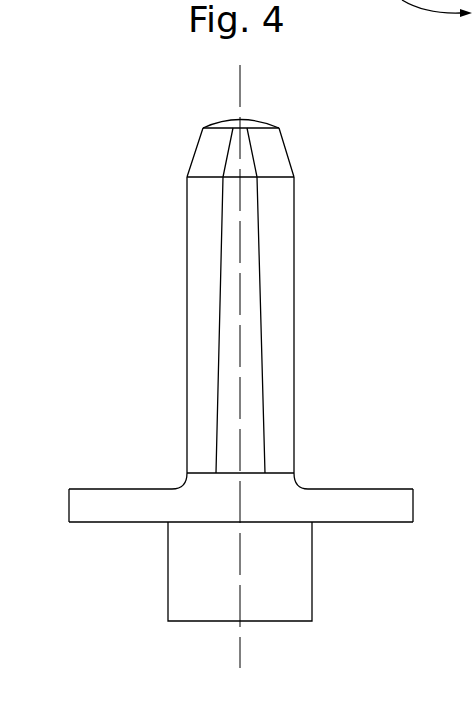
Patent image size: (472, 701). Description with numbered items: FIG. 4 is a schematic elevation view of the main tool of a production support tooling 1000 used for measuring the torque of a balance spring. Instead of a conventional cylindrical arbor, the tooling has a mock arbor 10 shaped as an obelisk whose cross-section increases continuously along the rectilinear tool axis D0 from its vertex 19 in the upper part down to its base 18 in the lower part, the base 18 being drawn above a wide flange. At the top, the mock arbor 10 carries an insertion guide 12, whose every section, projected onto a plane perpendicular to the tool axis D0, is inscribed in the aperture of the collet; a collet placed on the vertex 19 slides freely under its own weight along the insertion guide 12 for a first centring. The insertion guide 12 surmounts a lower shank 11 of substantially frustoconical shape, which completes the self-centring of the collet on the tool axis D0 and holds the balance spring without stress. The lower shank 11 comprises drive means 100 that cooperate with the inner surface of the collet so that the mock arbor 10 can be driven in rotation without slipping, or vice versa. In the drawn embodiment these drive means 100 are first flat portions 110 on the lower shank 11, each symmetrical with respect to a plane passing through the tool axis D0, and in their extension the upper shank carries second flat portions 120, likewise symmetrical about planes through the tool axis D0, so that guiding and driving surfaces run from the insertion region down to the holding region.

The production support tooling 1000 is at (209, 356).
The mock arbor 10 is at (242, 290).
The lower shank 11 is at (202, 301).
The insertion guide 12 is at (190, 167).
The base 18 is at (306, 478).
The vertex 19 is at (270, 118).
The drive means 100 is at (310, 300).
The first flat portions 110 is at (252, 256).
The second flat portions 120 is at (247, 167).
The tool axis D0 is at (230, 95).